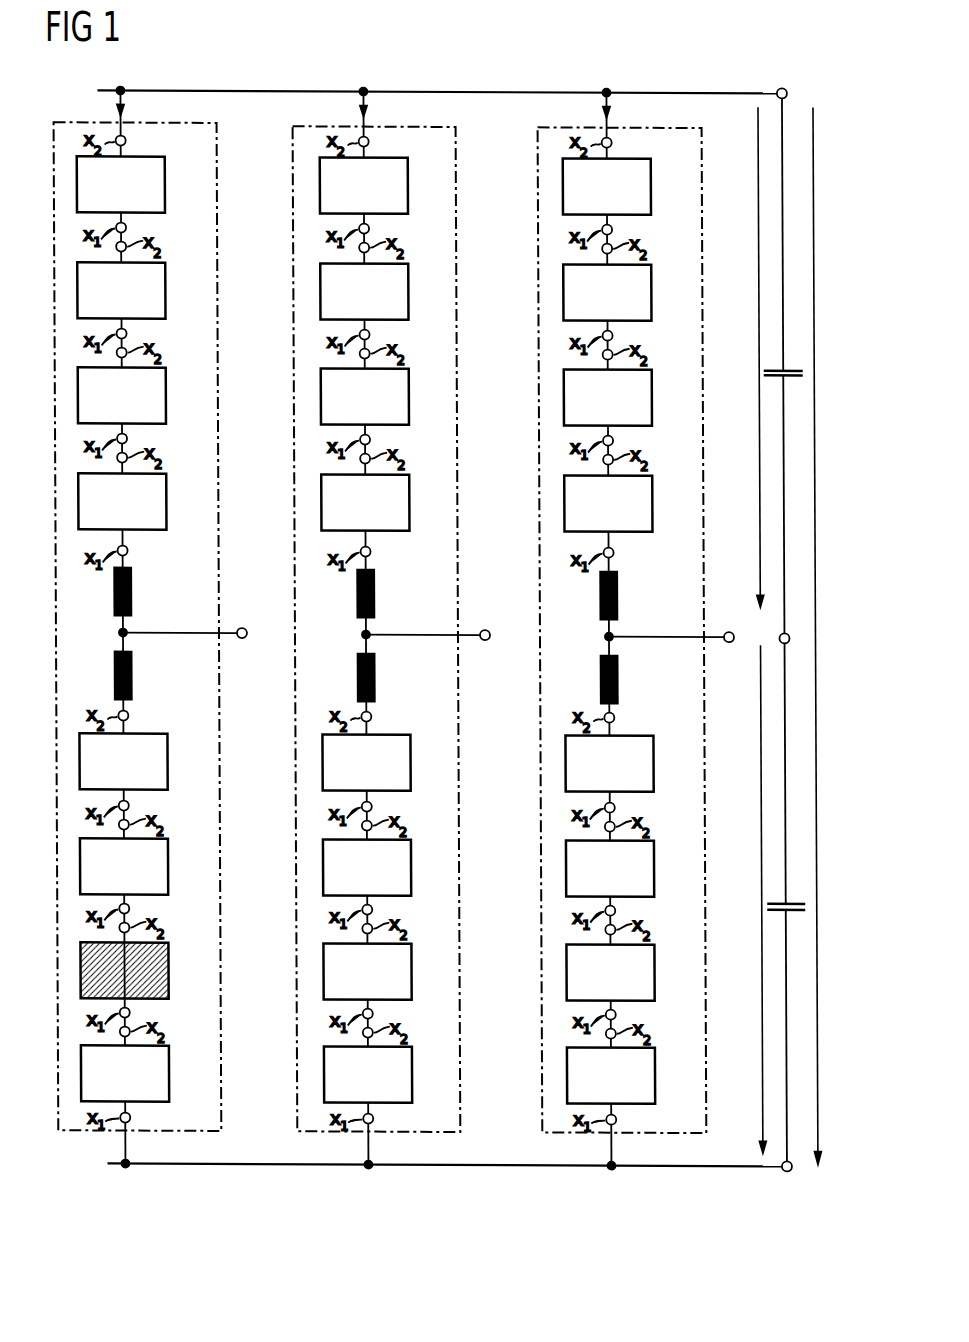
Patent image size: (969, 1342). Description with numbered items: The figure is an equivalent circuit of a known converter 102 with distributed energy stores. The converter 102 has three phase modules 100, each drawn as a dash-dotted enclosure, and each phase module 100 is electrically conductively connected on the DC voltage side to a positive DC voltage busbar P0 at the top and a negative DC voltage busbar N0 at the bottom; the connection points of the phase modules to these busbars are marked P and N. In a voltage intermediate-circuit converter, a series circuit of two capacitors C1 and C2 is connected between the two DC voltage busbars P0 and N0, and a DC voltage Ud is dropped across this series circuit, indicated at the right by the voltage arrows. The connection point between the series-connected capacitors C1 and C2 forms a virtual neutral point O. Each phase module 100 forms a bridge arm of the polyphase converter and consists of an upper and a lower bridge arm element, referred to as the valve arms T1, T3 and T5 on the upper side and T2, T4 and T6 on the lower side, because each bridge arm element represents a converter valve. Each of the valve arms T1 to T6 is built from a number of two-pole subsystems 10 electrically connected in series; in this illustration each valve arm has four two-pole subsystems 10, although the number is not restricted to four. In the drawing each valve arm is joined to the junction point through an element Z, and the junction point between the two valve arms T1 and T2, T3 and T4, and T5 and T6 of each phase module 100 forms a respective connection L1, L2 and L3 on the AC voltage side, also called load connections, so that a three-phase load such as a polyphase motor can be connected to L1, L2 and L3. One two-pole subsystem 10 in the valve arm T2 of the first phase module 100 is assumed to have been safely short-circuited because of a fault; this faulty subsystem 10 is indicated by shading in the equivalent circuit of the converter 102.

The two-pole subsystem 10 is at (386, 630).
The phase module 100 is at (216, 241).
The converter 102 is at (492, 76).
The valve arm T1 is at (193, 346).
The valve arm T2 is at (193, 921).
The valve arm T3 is at (433, 348).
The valve arm T4 is at (435, 925).
The valve arm T5 is at (556, 290).
The valve arm T6 is at (556, 727).
The inductor / impedance Z is at (129, 592).
The connection on the AC voltage side L1 is at (200, 635).
The connection on the AC voltage side L2 is at (443, 637).
The connection on the AC voltage side L3 is at (687, 639).
The capacitor C1 is at (790, 365).
The capacitor C2 is at (795, 902).
The virtual neutral point O is at (797, 641).
The DC voltage Ud is at (759, 912).
The positive DC terminal P is at (363, 70).
The positive DC voltage busbar P0 is at (267, 87).
The negative DC terminal N is at (371, 1190).
The negative DC voltage busbar N0 is at (240, 1166).